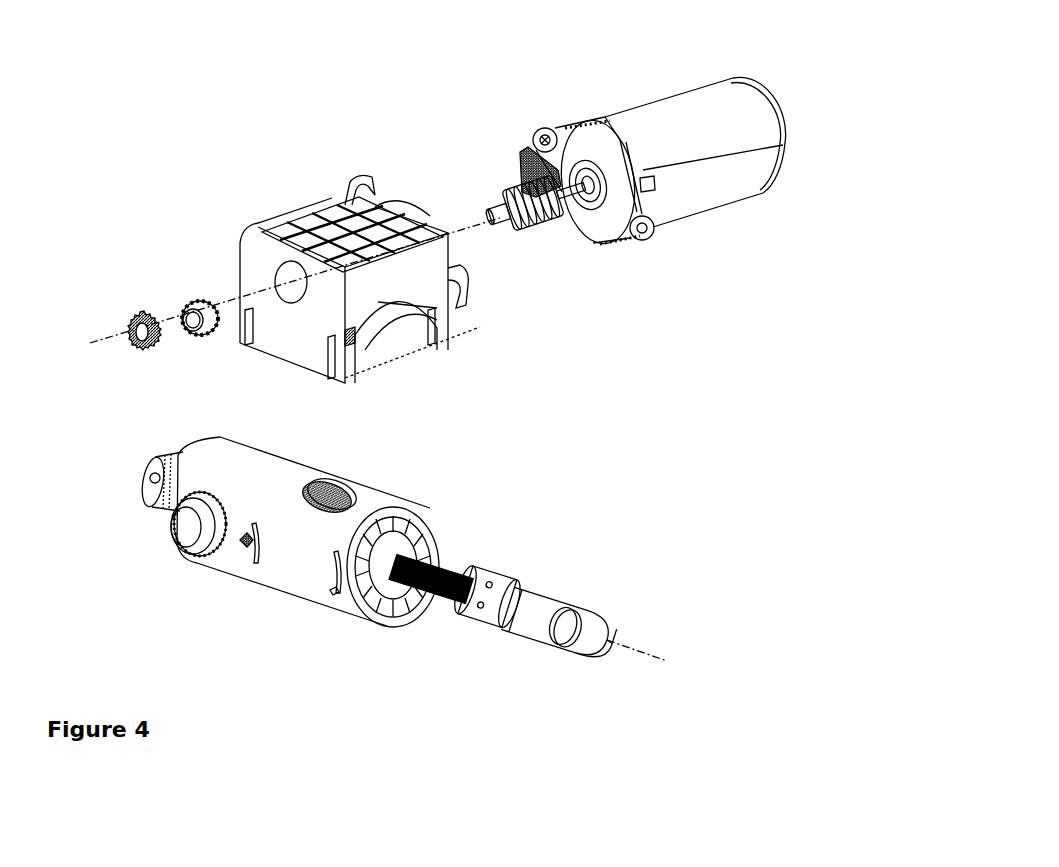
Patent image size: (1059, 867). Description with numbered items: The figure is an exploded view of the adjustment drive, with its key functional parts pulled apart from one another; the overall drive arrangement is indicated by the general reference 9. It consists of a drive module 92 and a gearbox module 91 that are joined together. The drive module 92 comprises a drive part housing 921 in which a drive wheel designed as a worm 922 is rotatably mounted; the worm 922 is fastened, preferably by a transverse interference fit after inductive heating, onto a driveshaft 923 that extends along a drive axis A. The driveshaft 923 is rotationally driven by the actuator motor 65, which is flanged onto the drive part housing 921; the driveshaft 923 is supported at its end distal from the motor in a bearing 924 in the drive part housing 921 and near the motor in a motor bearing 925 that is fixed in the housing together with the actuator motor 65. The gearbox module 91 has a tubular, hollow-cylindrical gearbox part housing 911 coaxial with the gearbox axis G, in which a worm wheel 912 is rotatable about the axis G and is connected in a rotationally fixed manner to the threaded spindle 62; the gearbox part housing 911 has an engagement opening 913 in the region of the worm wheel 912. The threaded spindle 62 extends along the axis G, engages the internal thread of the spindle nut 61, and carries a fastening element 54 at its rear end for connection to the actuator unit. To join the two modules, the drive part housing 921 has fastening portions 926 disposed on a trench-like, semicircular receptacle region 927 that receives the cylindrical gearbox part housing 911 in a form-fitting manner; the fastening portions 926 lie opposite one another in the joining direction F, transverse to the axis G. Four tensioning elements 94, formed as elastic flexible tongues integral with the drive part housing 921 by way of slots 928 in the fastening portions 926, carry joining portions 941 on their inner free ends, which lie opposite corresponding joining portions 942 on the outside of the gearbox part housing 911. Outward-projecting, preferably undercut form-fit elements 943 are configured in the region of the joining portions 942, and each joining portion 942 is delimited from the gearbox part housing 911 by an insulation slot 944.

The seat massage drive assembly 9 is at (768, 410).
The fastening element 54 is at (539, 607).
The spindle nut 61 is at (398, 516).
The threaded spindle 62 is at (466, 570).
The actuator motor 65 is at (740, 107).
The gearbox module 91 is at (198, 572).
The drive module 92 is at (576, 322).
The tensioning elements 94 is at (240, 342).
The gearbox part housing 911 is at (297, 574).
The worm wheel 912 is at (358, 490).
The engagement opening 913 is at (321, 481).
The drive part housing 921 is at (254, 243).
The worm 922 is at (530, 168).
The driveshaft 923 is at (556, 186).
The bearing 924 is at (188, 308).
The motor bearing 925 is at (594, 165).
The fastening portions 926 is at (288, 344).
The receptacle region 927 is at (406, 362).
The slots 928 is at (241, 344).
The joining portions 941 is at (386, 318).
The joining portions 942 is at (250, 544).
The form-fit elements 943 is at (200, 567).
The insulation slot 944 is at (258, 567).
The drive axis A is at (467, 220).
The joining direction F is at (480, 327).
The threaded spindle axis G is at (661, 659).